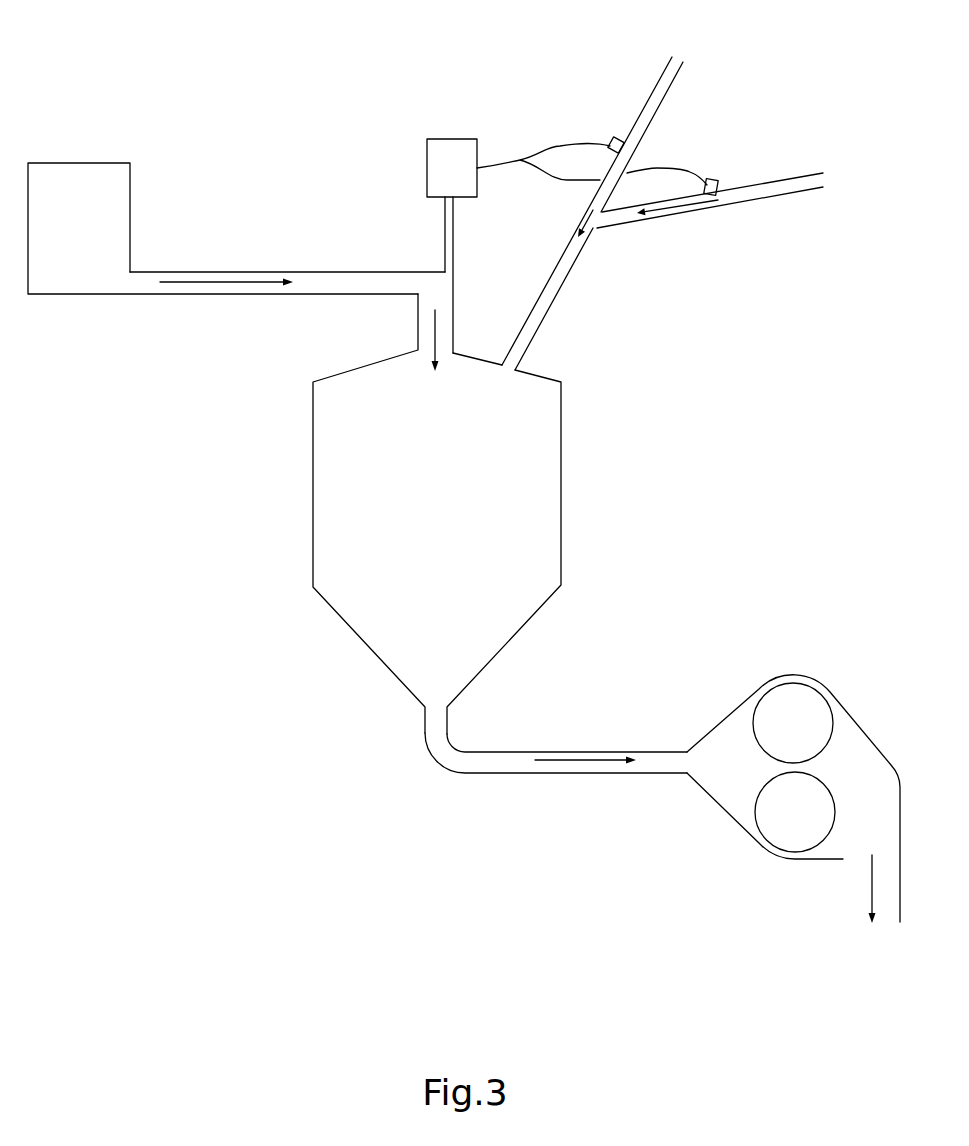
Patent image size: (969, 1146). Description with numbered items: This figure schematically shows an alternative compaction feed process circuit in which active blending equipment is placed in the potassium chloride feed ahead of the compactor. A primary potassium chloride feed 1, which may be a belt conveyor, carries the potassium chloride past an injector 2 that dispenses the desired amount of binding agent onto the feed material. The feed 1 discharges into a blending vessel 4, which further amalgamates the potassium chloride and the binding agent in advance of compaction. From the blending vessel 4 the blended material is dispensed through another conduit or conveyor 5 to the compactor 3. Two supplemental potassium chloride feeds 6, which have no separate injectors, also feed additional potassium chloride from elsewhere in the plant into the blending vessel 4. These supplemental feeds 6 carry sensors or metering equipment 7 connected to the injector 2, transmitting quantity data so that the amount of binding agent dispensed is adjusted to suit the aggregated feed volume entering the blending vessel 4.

The potassium chloride feed 1 is at (237, 272).
The injector 2 is at (449, 139).
The compactor 3 is at (837, 677).
The blending vessel 4 is at (313, 537).
The conduit or conveyor 5 is at (590, 774).
The supplemental potassium chloride feeds 6 is at (655, 91).
The sensors or metering equipment 7 is at (615, 139).